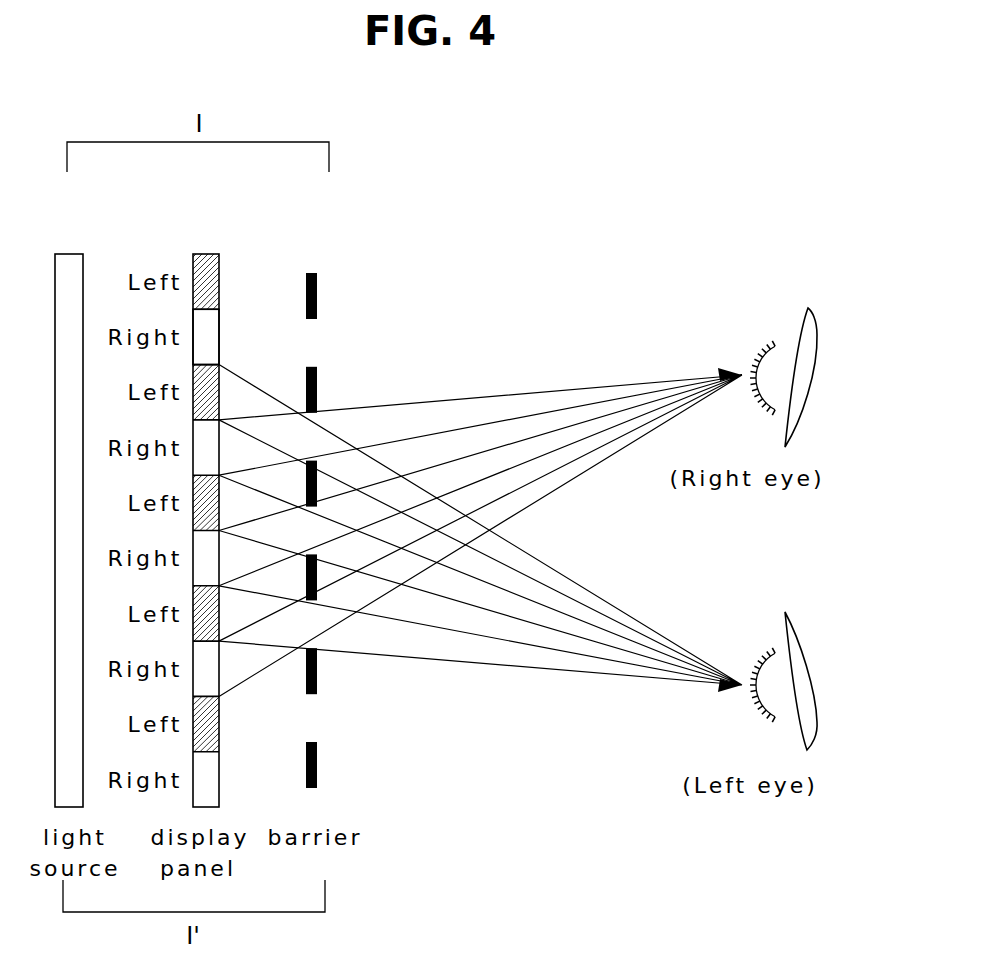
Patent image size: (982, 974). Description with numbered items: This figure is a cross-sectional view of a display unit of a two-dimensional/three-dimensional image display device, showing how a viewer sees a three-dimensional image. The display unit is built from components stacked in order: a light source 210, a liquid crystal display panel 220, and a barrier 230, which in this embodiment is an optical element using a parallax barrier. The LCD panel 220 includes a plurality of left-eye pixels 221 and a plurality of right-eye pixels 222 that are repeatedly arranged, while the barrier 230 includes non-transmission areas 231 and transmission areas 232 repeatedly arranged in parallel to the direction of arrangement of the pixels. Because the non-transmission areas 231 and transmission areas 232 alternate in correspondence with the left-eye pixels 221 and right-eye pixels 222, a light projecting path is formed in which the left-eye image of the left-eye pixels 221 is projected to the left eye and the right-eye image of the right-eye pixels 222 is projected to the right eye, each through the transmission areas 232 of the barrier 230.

The light source 210 is at (86, 250).
The liquid crystal display (LCD) panel 220 is at (238, 502).
The left-eye pixels 221 is at (220, 277).
The right-eye pixels 222 is at (220, 330).
The barrier 230 is at (345, 503).
The non-transmission areas 231 is at (318, 296).
The transmission areas 232 is at (318, 345).